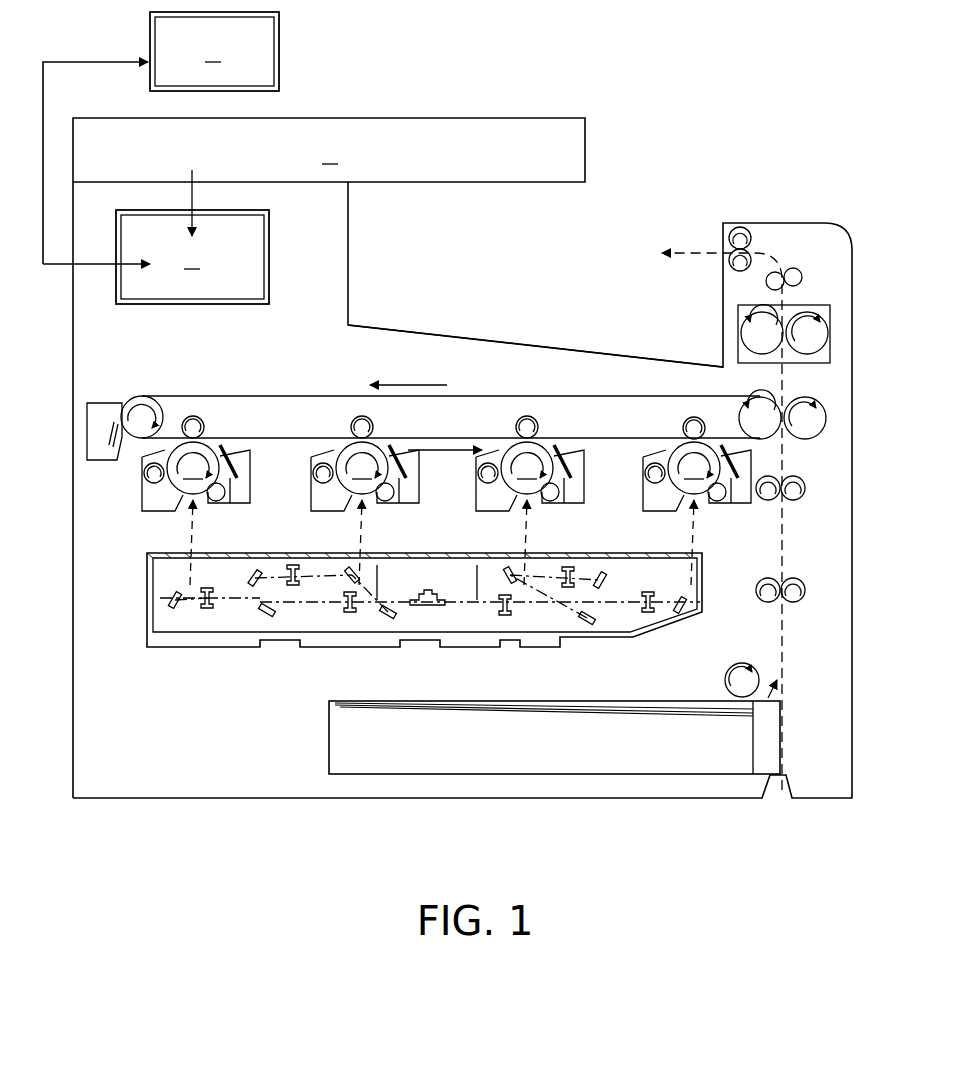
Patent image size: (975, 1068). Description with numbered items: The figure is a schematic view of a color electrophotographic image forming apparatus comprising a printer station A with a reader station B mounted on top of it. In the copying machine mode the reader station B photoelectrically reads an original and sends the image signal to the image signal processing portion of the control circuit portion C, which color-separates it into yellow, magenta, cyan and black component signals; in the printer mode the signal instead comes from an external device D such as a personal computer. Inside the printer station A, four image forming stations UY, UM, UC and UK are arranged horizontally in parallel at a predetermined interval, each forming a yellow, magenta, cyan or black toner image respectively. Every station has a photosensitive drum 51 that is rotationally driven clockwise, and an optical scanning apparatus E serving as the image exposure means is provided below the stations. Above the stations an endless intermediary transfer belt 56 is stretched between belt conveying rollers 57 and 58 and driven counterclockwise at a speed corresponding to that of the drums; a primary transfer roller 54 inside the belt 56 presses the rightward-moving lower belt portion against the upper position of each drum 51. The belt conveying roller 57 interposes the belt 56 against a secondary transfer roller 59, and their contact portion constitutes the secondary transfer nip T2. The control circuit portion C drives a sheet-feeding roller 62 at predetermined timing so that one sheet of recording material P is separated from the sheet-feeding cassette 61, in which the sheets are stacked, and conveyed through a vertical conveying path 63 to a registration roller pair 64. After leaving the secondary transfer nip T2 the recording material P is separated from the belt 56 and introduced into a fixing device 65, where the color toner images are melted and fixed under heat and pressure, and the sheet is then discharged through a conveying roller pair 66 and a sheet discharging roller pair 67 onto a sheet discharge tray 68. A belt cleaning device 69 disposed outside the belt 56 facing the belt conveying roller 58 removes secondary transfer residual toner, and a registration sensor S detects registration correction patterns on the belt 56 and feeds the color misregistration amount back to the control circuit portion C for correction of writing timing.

The printer station A is at (858, 470).
The reader station B is at (265, 188).
The control circuit portion C is at (156, 257).
The external device D is at (161, 138).
The optical scanning apparatus E is at (258, 660).
The recording material P is at (683, 700).
The registration sensor S is at (712, 392).
The secondary transfer nip T2 is at (790, 420).
The image forming station for yellow UY is at (140, 503).
The image forming station for magenta UM is at (306, 498).
The image forming station for cyan UC is at (472, 502).
The image forming station for black UK is at (638, 505).
The photosensitive drum 51 is at (446, 513).
The primary transfer roller 54 is at (193, 416).
The intermediary transfer belt 56 is at (478, 384).
The belt conveying roller 57 is at (750, 410).
The belt conveying roller 58 is at (148, 407).
The secondary transfer roller 59 is at (808, 432).
The sheet-feeding cassette 61 is at (530, 775).
The sheet-feeding roller 62 is at (742, 672).
The vertical conveying path 63 is at (783, 640).
The registration roller pair 64 is at (798, 500).
The fixing device 65 is at (832, 332).
The conveying roller pair 66 is at (797, 268).
The sheet discharging roller pair 67 is at (745, 228).
The sheet discharge tray 68 is at (578, 348).
The belt cleaning device 69 is at (107, 410).